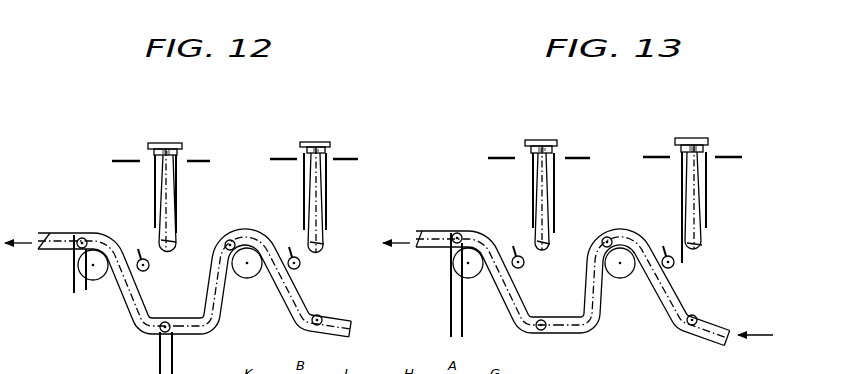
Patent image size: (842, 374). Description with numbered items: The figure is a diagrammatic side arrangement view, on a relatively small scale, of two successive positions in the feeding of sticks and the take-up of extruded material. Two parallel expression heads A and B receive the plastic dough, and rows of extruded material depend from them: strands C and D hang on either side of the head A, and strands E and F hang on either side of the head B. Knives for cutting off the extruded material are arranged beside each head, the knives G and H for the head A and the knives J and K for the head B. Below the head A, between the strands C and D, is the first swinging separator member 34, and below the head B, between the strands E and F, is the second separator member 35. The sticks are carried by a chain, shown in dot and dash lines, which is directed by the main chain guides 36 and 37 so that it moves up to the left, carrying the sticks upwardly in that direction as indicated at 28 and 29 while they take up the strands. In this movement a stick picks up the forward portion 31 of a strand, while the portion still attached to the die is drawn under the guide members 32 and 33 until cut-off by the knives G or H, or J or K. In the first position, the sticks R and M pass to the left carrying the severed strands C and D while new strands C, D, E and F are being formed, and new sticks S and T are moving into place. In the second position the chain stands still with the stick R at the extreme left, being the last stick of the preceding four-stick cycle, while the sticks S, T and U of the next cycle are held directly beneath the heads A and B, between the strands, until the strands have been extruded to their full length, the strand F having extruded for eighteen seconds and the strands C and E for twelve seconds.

In FIG. 12, the upward-left stick movement path 28 is at (277, 299).
In FIG. 13, the upward-left stick movement path 28 is at (661, 296).
In FIG. 12, the upward-left stick movement path 29 is at (138, 306).
In FIG. 13, the upward-left stick movement path 29 is at (522, 308).
In FIG. 13, the forward portion of extruded strand 31 is at (448, 298).
In FIG. 12, the guide member 32 is at (300, 264).
In FIG. 13, the guide member 32 is at (680, 268).
In FIG. 12, the guide member 33 is at (150, 268).
In FIG. 13, the guide member 33 is at (525, 268).
In FIG. 12, the first swinging separator member 34 is at (322, 240).
In FIG. 13, the first swinging separator member 34 is at (703, 244).
In FIG. 12, the second separator member 35 is at (170, 241).
In FIG. 13, the second separator member 35 is at (548, 244).
In FIG. 12, the main chain guide 36 is at (250, 279).
In FIG. 13, the main chain guide 36 is at (622, 280).
In FIG. 12, the main chain guide 37 is at (97, 279).
In FIG. 13, the main chain guide 37 is at (481, 279).
In FIG. 12, the expression head A is at (317, 142).
In FIG. 13, the expression head A is at (697, 138).
In FIG. 12, the expression head B is at (163, 143).
In FIG. 13, the expression head B is at (545, 140).
In FIG. 12, the extruded strand C is at (174, 372).
In FIG. 13, the extruded strand C is at (708, 184).
In FIG. 12, the extruded strand D is at (70, 287).
In FIG. 13, the extruded strand D is at (681, 182).
In FIG. 12, the extruded strand E is at (178, 183).
In FIG. 13, the extruded strand E is at (556, 190).
In FIG. 12, the extruded strand F is at (152, 184).
In FIG. 13, the extruded strand F is at (532, 193).
In FIG. 12, the knife G is at (346, 158).
In FIG. 13, the knife G is at (732, 156).
In FIG. 12, the knife H is at (277, 157).
In FIG. 13, the knife H is at (655, 156).
In FIG. 12, the knife J is at (197, 158).
In FIG. 13, the knife J is at (583, 157).
In FIG. 12, the knife K is at (118, 158).
In FIG. 13, the knife K is at (497, 157).
In FIG. 12, the stick M is at (83, 238).
In FIG. 12, the stick R is at (168, 322).
In FIG. 13, the stick R is at (458, 233).
In FIG. 12, the stick S is at (231, 240).
In FIG. 13, the stick S is at (542, 331).
In FIG. 12, the stick T is at (320, 317).
In FIG. 13, the stick T is at (609, 237).
In FIG. 13, the stick U is at (696, 316).